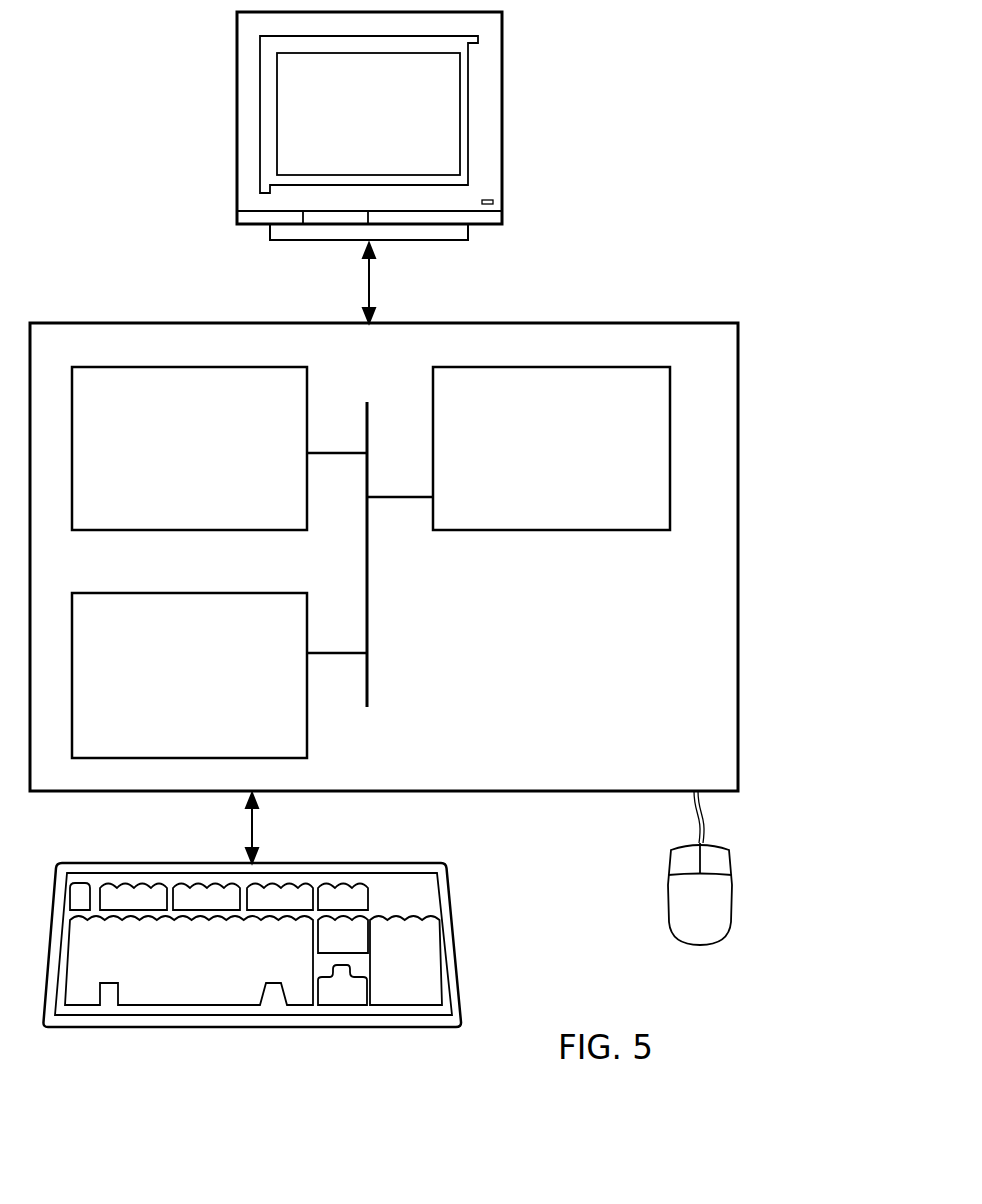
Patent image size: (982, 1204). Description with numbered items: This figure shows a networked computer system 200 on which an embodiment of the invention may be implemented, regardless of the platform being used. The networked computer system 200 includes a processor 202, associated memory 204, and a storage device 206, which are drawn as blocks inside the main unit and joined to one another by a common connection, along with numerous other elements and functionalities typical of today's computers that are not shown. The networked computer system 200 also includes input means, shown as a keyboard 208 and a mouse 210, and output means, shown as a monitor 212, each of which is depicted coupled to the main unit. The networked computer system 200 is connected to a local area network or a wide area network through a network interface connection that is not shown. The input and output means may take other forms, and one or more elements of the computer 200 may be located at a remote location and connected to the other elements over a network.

The networked computer system 200 is at (760, 169).
The processor 202 is at (549, 458).
The memory 204 is at (170, 458).
The storage device 206 is at (166, 688).
The keyboard 208 is at (160, 986).
The mouse 210 is at (678, 916).
The monitor 212 is at (390, 131).